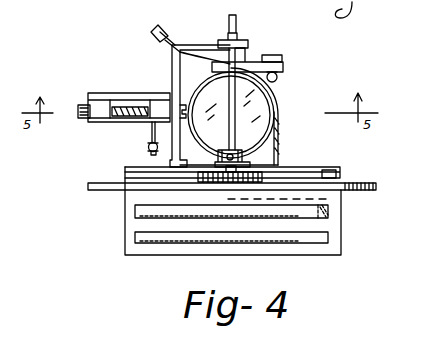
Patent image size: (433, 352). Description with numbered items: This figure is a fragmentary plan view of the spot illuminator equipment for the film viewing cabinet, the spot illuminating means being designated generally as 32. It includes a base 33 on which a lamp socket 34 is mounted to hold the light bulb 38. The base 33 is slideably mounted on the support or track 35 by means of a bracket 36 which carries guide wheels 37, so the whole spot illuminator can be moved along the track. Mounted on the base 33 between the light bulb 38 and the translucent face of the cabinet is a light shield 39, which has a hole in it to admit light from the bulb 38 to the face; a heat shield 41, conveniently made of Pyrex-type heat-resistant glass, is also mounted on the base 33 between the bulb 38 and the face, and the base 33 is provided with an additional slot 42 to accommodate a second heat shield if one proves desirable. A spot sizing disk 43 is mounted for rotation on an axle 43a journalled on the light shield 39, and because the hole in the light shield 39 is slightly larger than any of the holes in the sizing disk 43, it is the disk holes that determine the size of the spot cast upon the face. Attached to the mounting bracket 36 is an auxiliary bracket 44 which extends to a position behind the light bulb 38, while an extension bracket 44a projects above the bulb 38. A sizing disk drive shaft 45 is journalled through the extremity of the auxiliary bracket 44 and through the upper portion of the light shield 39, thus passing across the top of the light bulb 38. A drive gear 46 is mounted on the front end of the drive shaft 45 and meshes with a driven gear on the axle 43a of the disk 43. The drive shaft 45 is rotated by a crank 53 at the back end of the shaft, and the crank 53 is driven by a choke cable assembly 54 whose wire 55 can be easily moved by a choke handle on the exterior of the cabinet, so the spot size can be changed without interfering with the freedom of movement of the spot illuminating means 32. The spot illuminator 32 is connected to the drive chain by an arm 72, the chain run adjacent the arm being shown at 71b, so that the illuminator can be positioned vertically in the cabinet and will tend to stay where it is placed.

The spot illuminating means 32 is at (321, 87).
The base 33 is at (341, 215).
The lamp socket 34 is at (281, 120).
The support or track 35 is at (128, 105).
The bracket 36 is at (162, 104).
The guide wheels 37 is at (85, 121).
The light bulb 38 is at (240, 143).
The light shield 39 is at (336, 173).
The heat shield 41 is at (148, 218).
The additional slot 42 is at (166, 244).
The spot sizing disk 43 is at (120, 190).
The axle 43a is at (344, 201).
The auxiliary bracket 44 is at (171, 52).
The extension bracket 44a is at (247, 41).
The sizing disk drive shaft 45 is at (250, 152).
The drive gear 46 is at (126, 178).
The crank 53 is at (278, 76).
The choke cable assembly 54 is at (197, 28).
The wire 55 is at (153, 30).
The nut 71b is at (148, 149).
The arm 72 is at (151, 131).